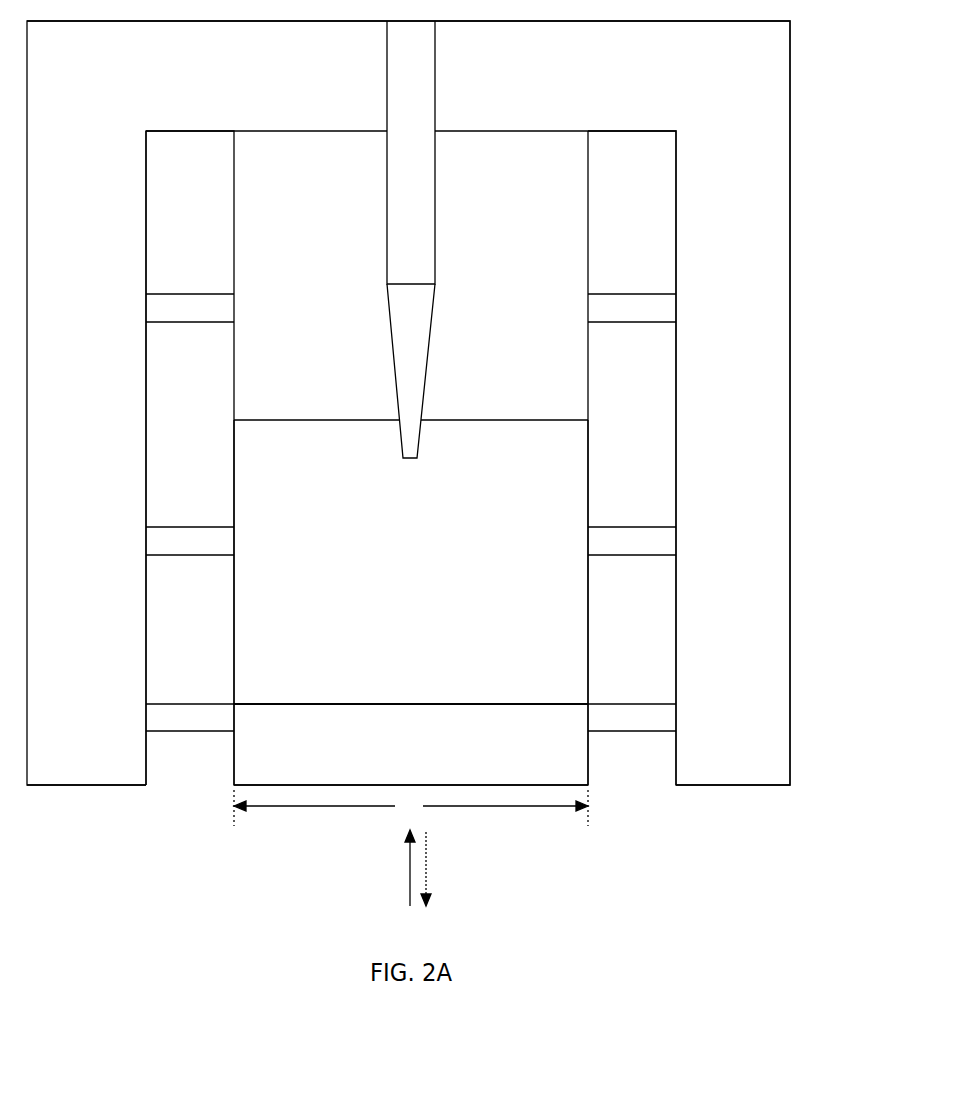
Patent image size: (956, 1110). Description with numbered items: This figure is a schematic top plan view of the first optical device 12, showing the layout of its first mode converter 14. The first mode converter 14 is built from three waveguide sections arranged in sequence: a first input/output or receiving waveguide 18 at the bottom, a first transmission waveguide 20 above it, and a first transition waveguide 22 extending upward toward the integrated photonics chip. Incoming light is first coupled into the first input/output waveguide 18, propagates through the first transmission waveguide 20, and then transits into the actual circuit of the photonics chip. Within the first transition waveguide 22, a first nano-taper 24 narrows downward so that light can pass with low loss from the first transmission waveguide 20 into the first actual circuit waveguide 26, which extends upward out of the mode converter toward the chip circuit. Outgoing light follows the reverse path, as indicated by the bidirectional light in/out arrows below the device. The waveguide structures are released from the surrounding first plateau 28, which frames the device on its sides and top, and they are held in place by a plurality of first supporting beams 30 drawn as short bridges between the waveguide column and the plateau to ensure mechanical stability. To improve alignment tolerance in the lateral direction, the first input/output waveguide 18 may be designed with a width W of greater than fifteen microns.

The first optical device 12 is at (836, 374).
The first mode converter 14 is at (493, 838).
The first input/output waveguide 18 is at (575, 770).
The first transmission waveguide 20 is at (565, 492).
The first transition waveguide 22 is at (569, 257).
The first nano-taper 24 is at (413, 333).
The first actual circuit waveguide 26 is at (420, 245).
The first plateau 28 is at (708, 186).
The first supporting beams 30 is at (185, 309).